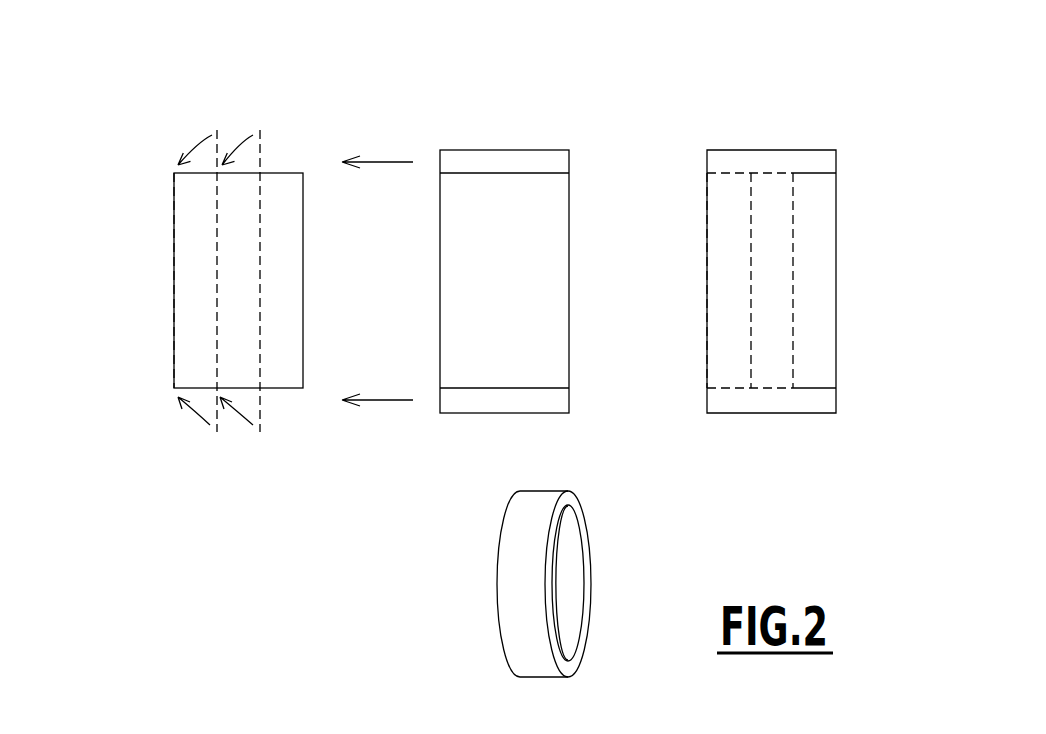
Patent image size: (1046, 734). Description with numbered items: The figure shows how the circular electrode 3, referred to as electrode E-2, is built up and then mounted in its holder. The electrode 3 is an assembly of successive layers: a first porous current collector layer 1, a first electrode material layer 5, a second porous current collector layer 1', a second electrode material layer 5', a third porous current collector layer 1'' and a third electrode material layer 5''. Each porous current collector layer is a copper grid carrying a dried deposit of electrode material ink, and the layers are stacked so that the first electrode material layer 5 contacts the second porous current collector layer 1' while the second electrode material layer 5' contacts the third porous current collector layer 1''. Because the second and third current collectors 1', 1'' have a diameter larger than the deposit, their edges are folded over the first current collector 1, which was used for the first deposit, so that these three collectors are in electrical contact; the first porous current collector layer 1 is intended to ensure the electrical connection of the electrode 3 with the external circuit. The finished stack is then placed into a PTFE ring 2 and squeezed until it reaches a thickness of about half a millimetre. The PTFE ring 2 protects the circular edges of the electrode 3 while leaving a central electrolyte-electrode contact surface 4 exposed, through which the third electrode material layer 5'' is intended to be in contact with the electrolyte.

The first porous current collector layer 1 is at (467, 252).
The second porous current collector layer 1' is at (450, 234).
The third porous current collector layer 1'' is at (516, 216).
The PTFE ring 2 is at (490, 403).
The electrode 3 is at (475, 553).
The central electrolyte-electrode contact surface 4 is at (572, 570).
The first electrode material layer 5 is at (489, 284).
The second electrode material layer 5' is at (515, 269).
The third electrode material layer 5'' is at (513, 272).